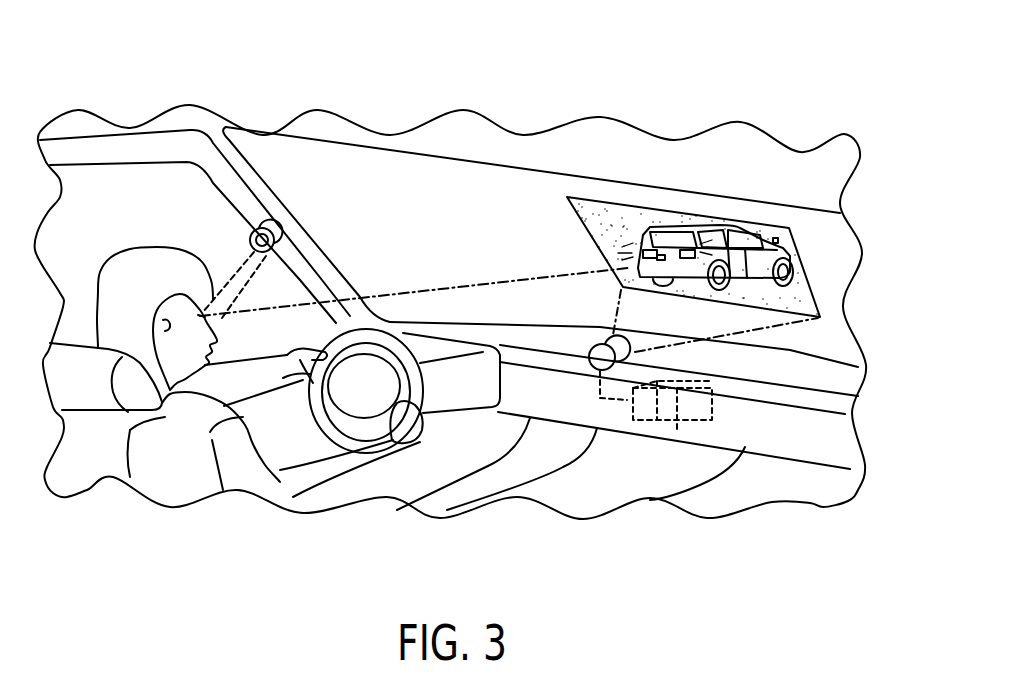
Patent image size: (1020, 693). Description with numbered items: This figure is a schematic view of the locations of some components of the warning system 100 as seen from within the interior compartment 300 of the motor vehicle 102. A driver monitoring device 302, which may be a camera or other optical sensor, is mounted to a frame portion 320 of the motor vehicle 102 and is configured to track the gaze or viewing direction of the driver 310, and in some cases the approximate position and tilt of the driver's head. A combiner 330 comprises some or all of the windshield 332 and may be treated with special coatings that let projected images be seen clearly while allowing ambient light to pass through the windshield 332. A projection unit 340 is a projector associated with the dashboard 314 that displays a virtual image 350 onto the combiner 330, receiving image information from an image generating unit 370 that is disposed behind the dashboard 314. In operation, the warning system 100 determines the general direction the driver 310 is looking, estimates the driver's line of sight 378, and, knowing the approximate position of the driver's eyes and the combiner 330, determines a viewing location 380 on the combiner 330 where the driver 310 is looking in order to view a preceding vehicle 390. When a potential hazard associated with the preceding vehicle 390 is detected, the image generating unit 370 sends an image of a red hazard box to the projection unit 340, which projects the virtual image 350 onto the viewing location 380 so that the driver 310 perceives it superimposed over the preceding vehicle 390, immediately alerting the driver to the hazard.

The warning system 100 is at (355, 155).
The motor vehicle 102 is at (433, 112).
The interior compartment 300 is at (475, 497).
The driver monitoring device 302 is at (251, 235).
The driver 310 is at (130, 270).
The dashboard 314 is at (826, 437).
The frame portion 320 is at (305, 243).
The combiner 330 is at (287, 142).
The windshield 332 is at (453, 172).
The projection unit 340 is at (595, 347).
The virtual image 350 is at (587, 226).
The image generating unit 370 is at (713, 408).
The line of sight 378 is at (443, 287).
The viewing location 380 is at (605, 215).
The preceding vehicle 390 is at (713, 227).